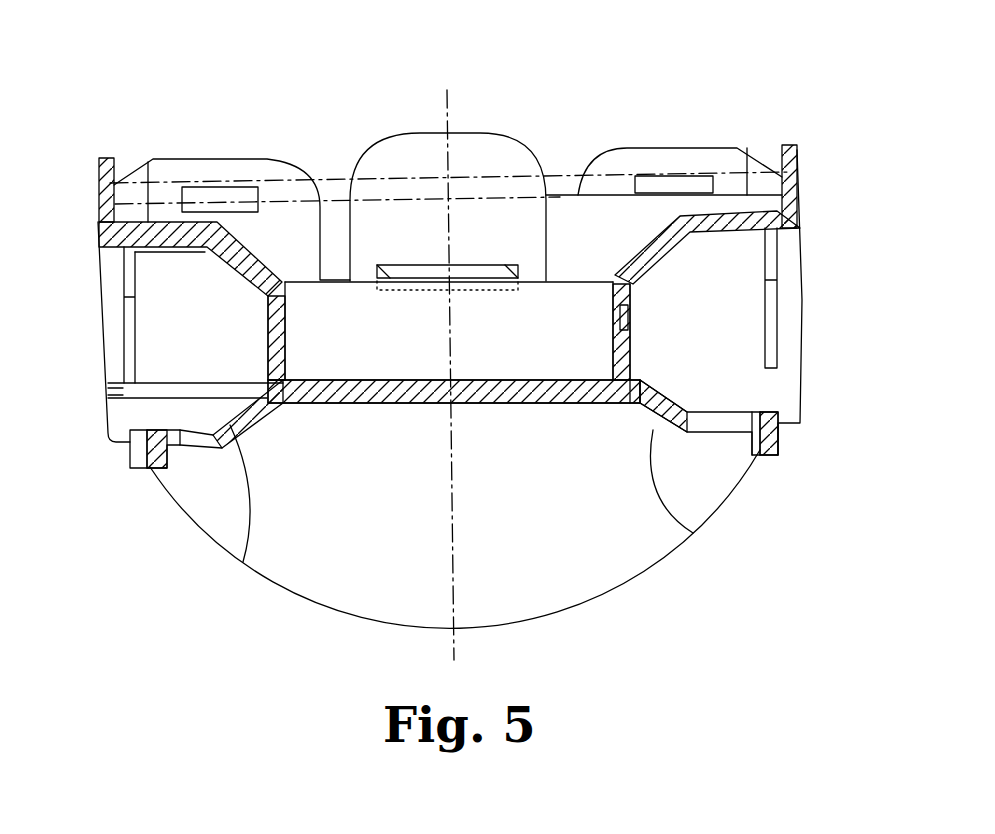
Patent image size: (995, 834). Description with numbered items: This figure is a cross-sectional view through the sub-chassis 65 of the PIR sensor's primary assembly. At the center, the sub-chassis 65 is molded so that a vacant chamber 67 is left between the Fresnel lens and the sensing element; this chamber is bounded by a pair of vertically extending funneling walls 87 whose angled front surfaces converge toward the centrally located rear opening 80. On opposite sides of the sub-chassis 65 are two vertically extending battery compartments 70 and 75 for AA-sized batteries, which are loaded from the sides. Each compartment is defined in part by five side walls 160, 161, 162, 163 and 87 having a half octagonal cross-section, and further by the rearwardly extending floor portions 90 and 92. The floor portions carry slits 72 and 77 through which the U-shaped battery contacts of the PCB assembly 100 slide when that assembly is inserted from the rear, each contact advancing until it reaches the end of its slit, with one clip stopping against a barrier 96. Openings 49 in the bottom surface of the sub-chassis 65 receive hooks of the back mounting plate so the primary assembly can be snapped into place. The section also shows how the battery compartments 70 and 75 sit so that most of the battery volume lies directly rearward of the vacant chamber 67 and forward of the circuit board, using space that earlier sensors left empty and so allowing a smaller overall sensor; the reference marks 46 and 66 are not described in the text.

The dome lens 46 is at (458, 132).
The openings 49 is at (203, 192).
The sub-chassis 65 is at (417, 86).
The outer wall arc 66 is at (607, 593).
The vacant chamber 67 is at (338, 586).
The battery compartment 70 is at (728, 372).
The slit 72 is at (773, 298).
The battery compartment 75 is at (165, 365).
The slit 77 is at (127, 333).
The rear opening 80 is at (398, 272).
The vertically extending funneling walls 87 is at (243, 562).
The floor portion 90 is at (747, 257).
The floor portion 92 is at (140, 263).
The barrier 96 is at (122, 393).
The PCB assembly 100 is at (560, 183).
The side wall 160 is at (172, 478).
The side wall 161 is at (277, 303).
The side wall 162 is at (237, 257).
The side wall 163 is at (107, 235).